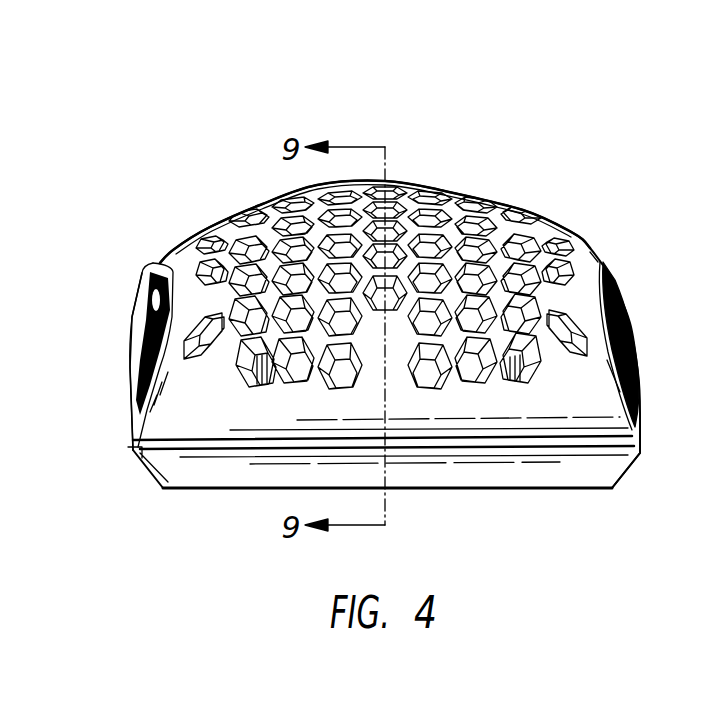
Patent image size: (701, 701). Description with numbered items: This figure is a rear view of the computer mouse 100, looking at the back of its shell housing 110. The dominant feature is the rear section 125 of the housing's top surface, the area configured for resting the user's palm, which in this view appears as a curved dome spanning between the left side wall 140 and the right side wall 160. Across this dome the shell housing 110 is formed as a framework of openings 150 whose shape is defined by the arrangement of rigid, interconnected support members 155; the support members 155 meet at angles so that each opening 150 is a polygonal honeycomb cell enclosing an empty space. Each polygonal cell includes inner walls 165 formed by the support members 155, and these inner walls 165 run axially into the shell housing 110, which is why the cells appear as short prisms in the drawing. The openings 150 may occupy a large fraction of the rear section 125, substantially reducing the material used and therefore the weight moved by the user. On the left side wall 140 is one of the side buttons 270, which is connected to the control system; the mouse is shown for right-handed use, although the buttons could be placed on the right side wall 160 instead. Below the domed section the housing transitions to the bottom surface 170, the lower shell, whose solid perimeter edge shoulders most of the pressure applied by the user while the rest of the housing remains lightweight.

The computer mouse 100 is at (612, 136).
The shell housing 110 is at (598, 239).
The rear section 125 is at (403, 397).
The left side wall 140 is at (130, 394).
The openings 150 is at (330, 383).
The support members 155 is at (451, 186).
The right side wall 160 is at (643, 342).
The inner walls 165 is at (520, 352).
The bottom surface 170 is at (510, 490).
The side buttons 270 is at (143, 275).